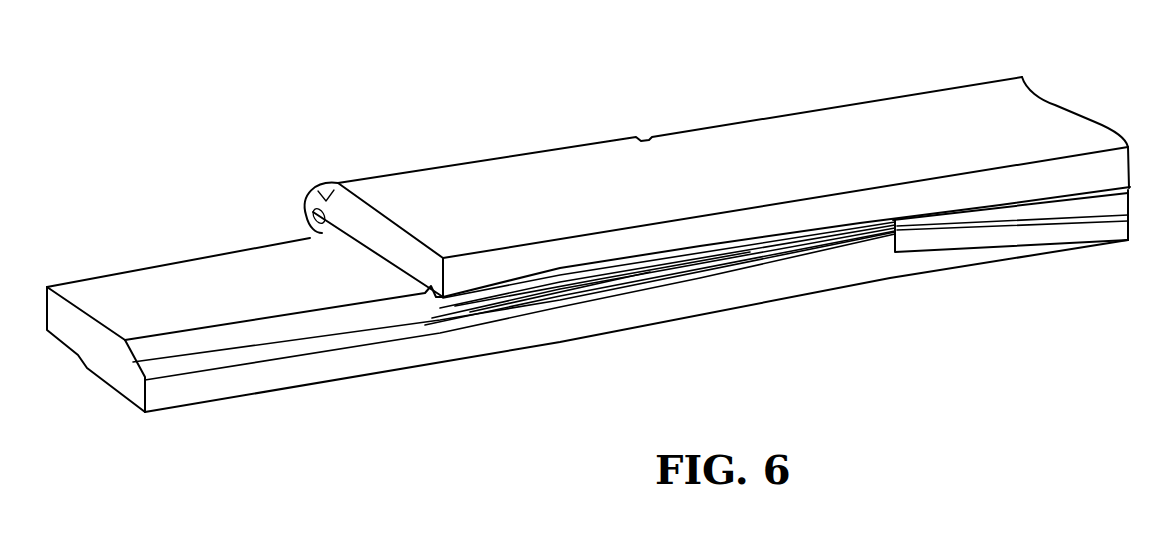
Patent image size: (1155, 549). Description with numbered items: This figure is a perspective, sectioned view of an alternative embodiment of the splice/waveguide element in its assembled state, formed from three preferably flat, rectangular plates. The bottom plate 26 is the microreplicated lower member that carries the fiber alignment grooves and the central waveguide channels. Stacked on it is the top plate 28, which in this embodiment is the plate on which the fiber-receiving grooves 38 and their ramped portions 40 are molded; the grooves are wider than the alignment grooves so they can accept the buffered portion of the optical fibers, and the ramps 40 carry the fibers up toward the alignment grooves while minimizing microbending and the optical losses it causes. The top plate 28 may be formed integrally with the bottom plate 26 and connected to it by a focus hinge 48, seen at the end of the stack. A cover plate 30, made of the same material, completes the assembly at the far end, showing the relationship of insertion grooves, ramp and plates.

The bottom plate 26 is at (728, 133).
The top plate 28 is at (816, 295).
The cover plate 30 is at (1003, 229).
The fiber-receiving grooves 38 is at (150, 353).
The ramped portions 40 is at (548, 298).
The focus hinge 48 is at (307, 193).